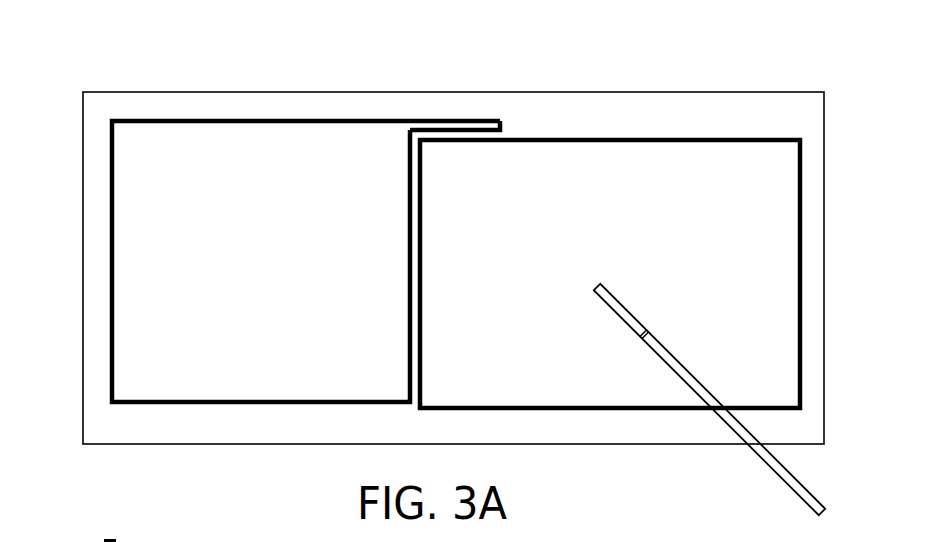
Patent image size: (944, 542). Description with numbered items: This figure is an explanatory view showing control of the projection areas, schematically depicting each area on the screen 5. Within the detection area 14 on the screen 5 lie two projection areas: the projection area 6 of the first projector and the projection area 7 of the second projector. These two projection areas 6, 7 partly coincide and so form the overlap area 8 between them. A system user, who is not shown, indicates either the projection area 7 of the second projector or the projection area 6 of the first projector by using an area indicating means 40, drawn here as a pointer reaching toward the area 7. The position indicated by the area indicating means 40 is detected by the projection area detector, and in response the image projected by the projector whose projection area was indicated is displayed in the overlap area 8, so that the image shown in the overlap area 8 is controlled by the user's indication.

The screen 5 is at (196, 74).
The detection area 14 is at (136, 93).
The projection area 6 is at (282, 205).
The projection area 7 is at (582, 203).
The overlap area 8 is at (457, 190).
The area indicating means 40 is at (715, 418).